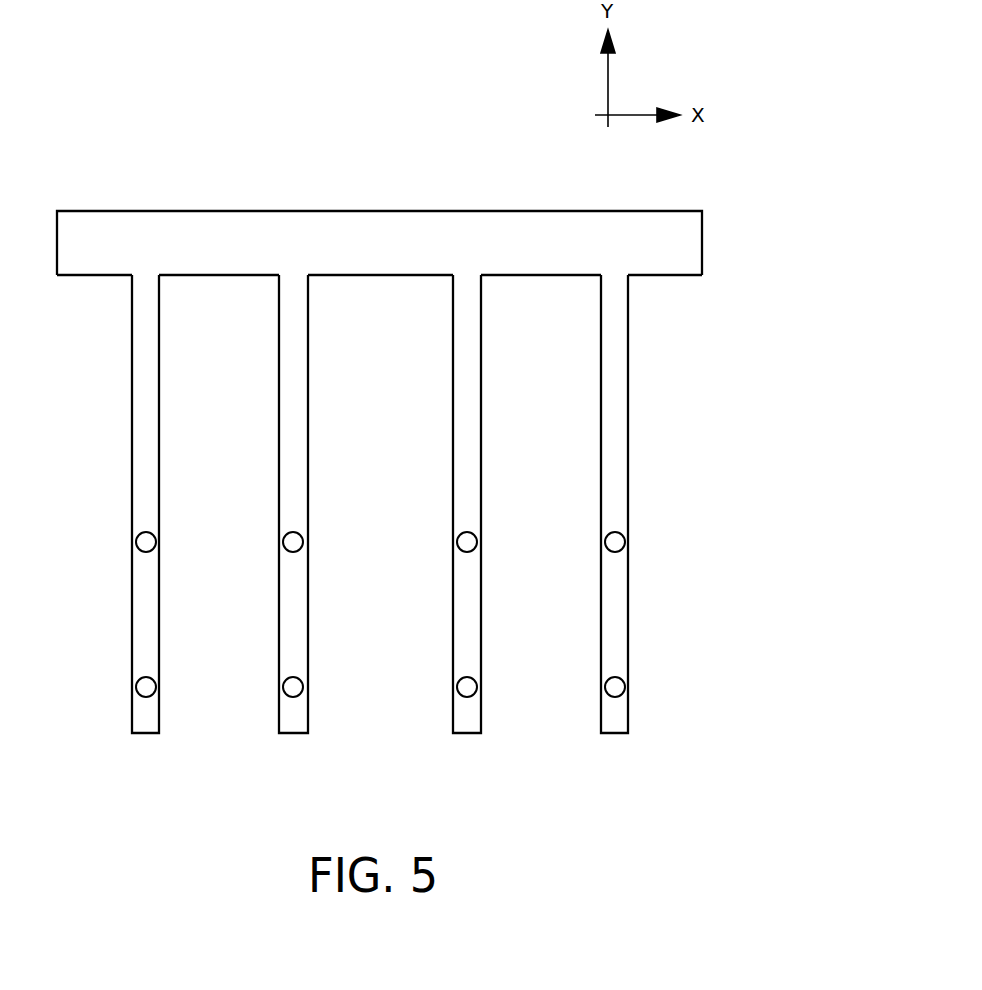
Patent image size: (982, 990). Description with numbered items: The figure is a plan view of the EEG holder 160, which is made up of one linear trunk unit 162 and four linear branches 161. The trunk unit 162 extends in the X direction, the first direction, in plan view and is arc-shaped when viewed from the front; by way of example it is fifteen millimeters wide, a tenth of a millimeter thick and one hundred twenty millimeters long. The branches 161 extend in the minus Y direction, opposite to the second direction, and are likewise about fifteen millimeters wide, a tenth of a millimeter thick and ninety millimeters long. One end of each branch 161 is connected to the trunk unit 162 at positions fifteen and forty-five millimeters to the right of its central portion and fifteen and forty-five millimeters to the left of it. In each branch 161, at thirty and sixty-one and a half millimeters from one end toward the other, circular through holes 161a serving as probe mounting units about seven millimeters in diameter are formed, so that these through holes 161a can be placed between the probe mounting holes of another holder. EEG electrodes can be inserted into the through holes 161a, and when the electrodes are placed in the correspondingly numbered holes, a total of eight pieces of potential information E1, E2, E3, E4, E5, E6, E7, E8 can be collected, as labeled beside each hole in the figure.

The EEG holder 160 is at (392, 150).
The trunk unit 162 is at (702, 240).
The branch 161 is at (628, 372).
The through hole (probe mounting unit) 161a is at (619, 533).
The potential information E1 is at (126, 541).
The potential information E2 is at (126, 687).
The potential information E3 is at (274, 541).
The potential information E4 is at (274, 687).
The potential information E5 is at (448, 541).
The potential information E6 is at (448, 687).
The potential information E7 is at (647, 512).
The potential information E8 is at (595, 687).